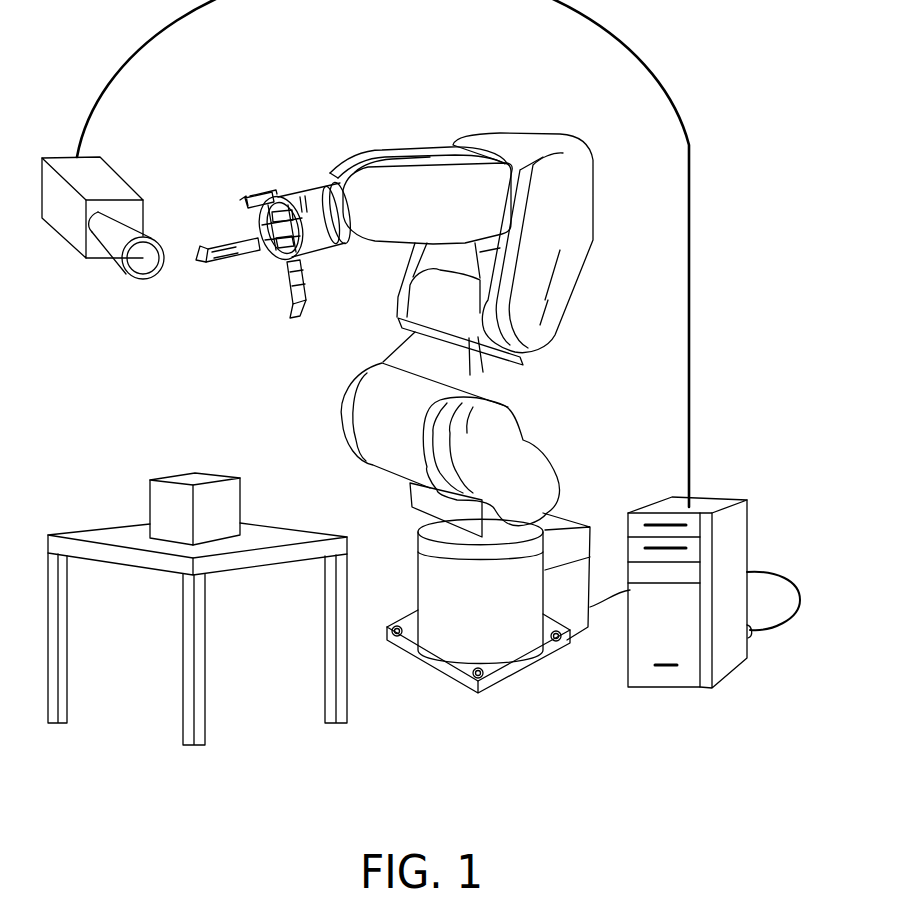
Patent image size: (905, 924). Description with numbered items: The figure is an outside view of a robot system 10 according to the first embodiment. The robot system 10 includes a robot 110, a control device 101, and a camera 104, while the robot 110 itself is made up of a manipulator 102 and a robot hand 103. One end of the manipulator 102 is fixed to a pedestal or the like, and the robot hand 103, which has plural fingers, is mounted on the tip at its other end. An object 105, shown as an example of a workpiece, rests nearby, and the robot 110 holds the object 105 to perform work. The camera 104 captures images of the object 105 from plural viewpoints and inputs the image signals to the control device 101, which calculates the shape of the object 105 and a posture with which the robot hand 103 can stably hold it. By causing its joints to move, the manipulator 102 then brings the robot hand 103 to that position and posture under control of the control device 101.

The robot system 10 is at (712, 87).
The control device 101 is at (703, 500).
The manipulator 102 is at (473, 137).
The robot hand 103 is at (258, 195).
The camera 104 is at (102, 187).
The object 105 is at (175, 472).
The robot 110 is at (457, 72).